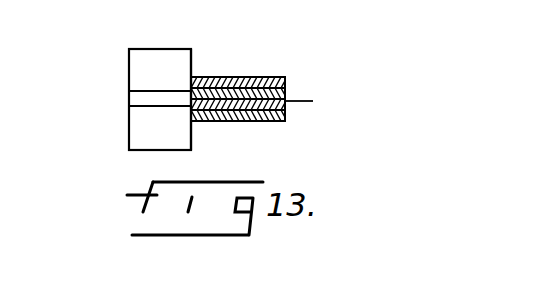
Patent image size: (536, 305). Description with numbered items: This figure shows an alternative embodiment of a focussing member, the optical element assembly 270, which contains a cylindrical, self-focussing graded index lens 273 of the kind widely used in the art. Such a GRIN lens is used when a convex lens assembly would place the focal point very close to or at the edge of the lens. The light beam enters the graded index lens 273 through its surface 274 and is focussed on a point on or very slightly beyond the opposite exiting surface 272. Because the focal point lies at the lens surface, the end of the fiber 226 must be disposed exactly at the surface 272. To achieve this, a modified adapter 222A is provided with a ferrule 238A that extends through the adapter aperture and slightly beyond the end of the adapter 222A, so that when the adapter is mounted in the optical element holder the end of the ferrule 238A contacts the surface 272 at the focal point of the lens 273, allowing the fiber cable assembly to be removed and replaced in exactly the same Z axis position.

The optical element assembly 270 is at (144, 47).
The exiting surface 272 is at (192, 58).
The graded index lens 273 is at (143, 96).
The entering surface 274 is at (131, 103).
The modified adapter 222A is at (220, 122).
The fiber 226 is at (301, 97).
The ferrule 238A is at (287, 105).